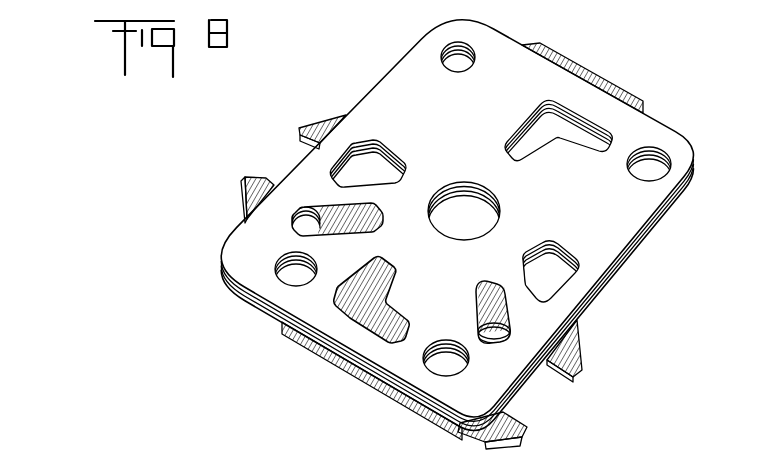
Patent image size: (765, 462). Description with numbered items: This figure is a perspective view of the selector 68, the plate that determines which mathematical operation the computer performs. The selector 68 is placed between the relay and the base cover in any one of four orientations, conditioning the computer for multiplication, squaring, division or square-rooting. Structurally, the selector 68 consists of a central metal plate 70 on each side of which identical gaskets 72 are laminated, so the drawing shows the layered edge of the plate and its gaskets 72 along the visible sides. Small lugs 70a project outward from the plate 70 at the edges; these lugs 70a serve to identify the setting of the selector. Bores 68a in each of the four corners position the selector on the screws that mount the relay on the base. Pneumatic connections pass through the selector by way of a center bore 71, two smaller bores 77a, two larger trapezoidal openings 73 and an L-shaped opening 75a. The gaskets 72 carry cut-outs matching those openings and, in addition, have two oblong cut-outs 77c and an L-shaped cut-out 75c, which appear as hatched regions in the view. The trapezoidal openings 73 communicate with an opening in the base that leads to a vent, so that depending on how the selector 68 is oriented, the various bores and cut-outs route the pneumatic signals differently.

The selector 68 is at (133, 276).
The bores 68a is at (455, 68).
The central metal plate 70 is at (587, 77).
The lugs 70a is at (320, 122).
The center bore 71 is at (473, 215).
The gaskets 72 is at (672, 143).
The trapezoidal openings 73 is at (378, 170).
The L-shaped opening 75a is at (545, 133).
The L-shaped cut-out 75c is at (385, 259).
The smaller bores 77a is at (308, 233).
The oblong cut-outs 77c is at (375, 213).